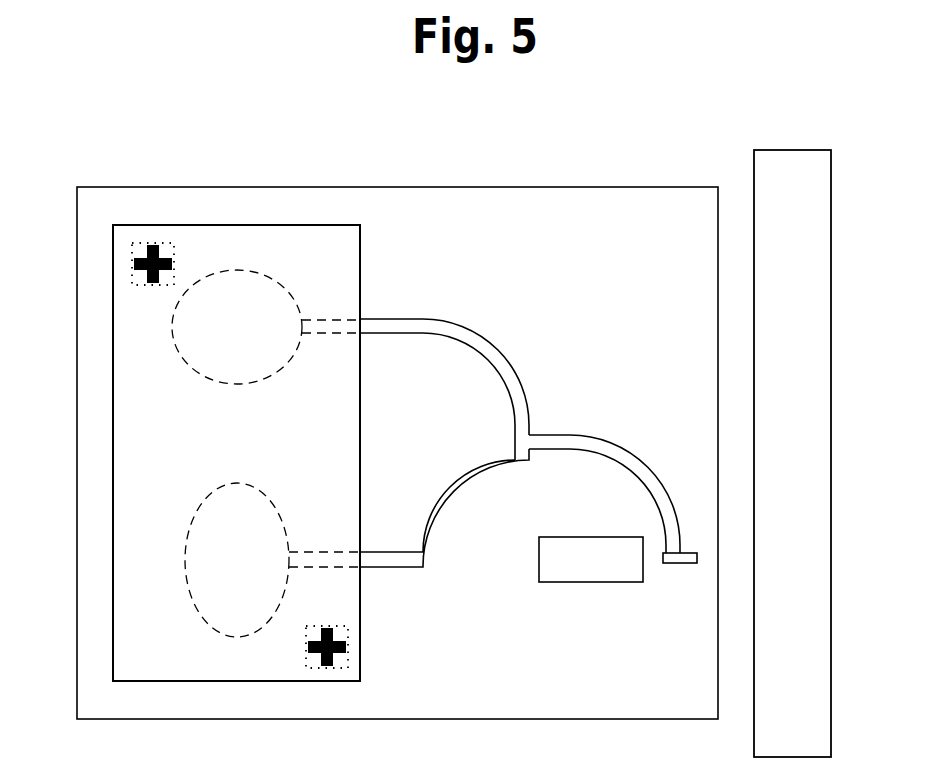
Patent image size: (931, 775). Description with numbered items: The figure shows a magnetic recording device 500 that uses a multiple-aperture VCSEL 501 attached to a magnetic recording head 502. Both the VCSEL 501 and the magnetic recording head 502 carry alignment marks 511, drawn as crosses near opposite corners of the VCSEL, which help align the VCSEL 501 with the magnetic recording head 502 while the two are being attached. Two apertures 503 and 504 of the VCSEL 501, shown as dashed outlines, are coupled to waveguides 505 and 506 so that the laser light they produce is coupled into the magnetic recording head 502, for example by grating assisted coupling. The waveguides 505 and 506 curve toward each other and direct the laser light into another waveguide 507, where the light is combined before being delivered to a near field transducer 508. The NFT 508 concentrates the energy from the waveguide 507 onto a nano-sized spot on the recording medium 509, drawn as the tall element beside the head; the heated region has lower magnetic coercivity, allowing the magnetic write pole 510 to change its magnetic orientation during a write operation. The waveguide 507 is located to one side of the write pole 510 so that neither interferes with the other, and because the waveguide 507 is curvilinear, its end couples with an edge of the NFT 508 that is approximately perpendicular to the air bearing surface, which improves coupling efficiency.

The magnetic recording device 500 is at (88, 88).
The multiple-aperture VCSEL 501 is at (317, 459).
The magnetic recording head 502 is at (397, 478).
The aperture 503 is at (259, 339).
The aperture 504 is at (259, 571).
The waveguide 505 is at (451, 365).
The waveguide 506 is at (451, 532).
The waveguide 507 is at (619, 469).
The near field transducer 508 is at (636, 594).
The recording medium 509 is at (815, 465).
The magnetic write pole 510 is at (613, 570).
The alignment marks 511 is at (240, 455).